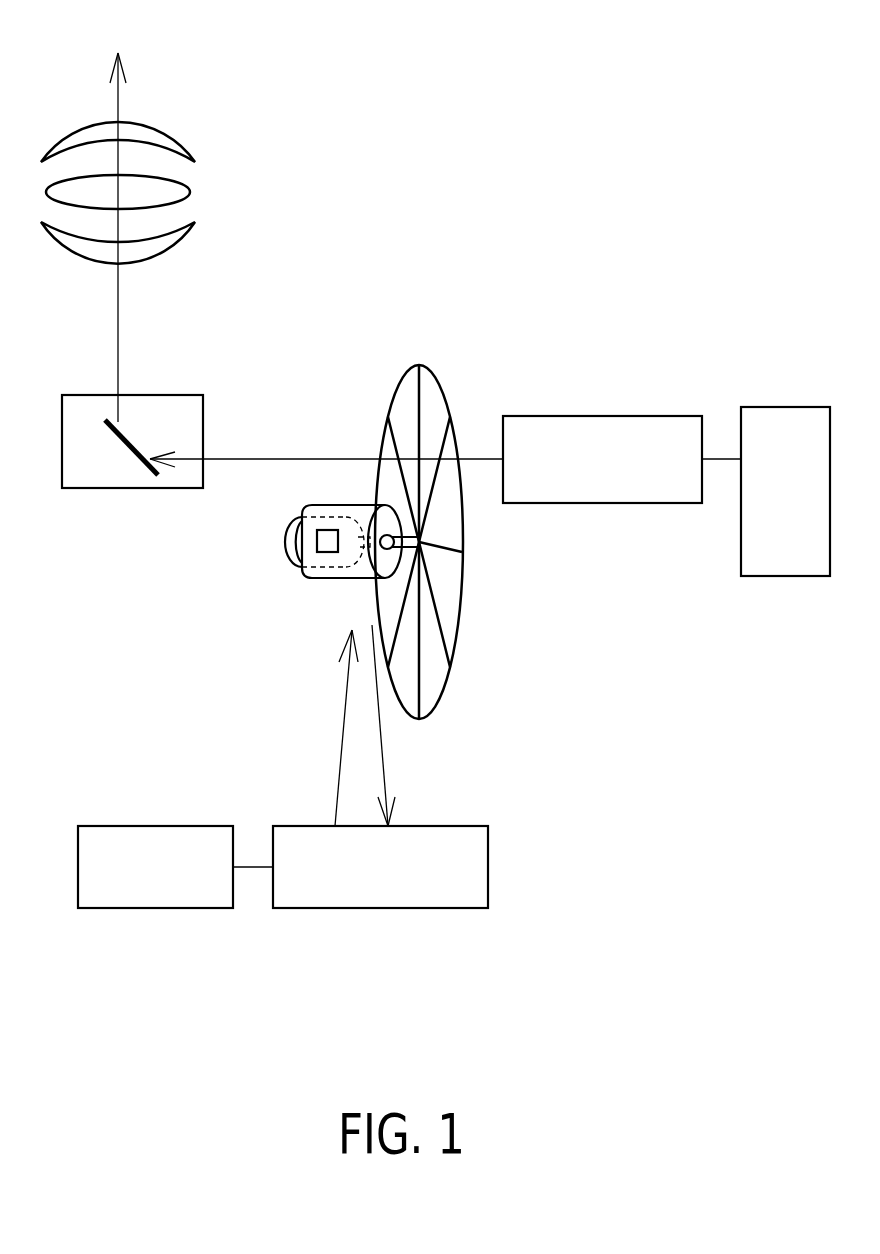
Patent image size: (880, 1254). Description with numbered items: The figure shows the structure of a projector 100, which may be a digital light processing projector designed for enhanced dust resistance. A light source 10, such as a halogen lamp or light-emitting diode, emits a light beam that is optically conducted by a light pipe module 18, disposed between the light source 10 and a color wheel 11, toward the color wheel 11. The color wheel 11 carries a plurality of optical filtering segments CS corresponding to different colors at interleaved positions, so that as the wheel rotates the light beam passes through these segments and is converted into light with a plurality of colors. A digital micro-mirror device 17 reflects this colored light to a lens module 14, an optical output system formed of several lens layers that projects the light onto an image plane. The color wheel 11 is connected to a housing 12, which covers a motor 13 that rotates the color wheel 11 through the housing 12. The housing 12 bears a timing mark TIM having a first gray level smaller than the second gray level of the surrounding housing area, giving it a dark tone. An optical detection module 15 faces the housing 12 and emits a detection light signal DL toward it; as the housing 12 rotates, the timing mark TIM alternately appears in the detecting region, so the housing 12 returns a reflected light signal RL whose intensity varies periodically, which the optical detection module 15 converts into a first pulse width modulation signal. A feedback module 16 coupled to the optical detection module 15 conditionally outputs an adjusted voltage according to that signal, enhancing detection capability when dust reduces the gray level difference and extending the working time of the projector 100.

The projector 100 is at (632, 88).
The light source 10 is at (798, 407).
The color wheel 11 is at (461, 637).
The housing 12 is at (328, 505).
The motor 13 is at (284, 533).
The lens module 14 is at (233, 152).
The optical detection module 15 is at (450, 826).
The feedback module 16 is at (122, 826).
The digital micro-mirror device 17 is at (162, 395).
The light pipe module 18 is at (628, 416).
The optical filtering segments CS is at (453, 527).
The timing mark TIM is at (325, 548).
The detection light signal DL is at (324, 728).
The reflected light signal RL is at (400, 725).